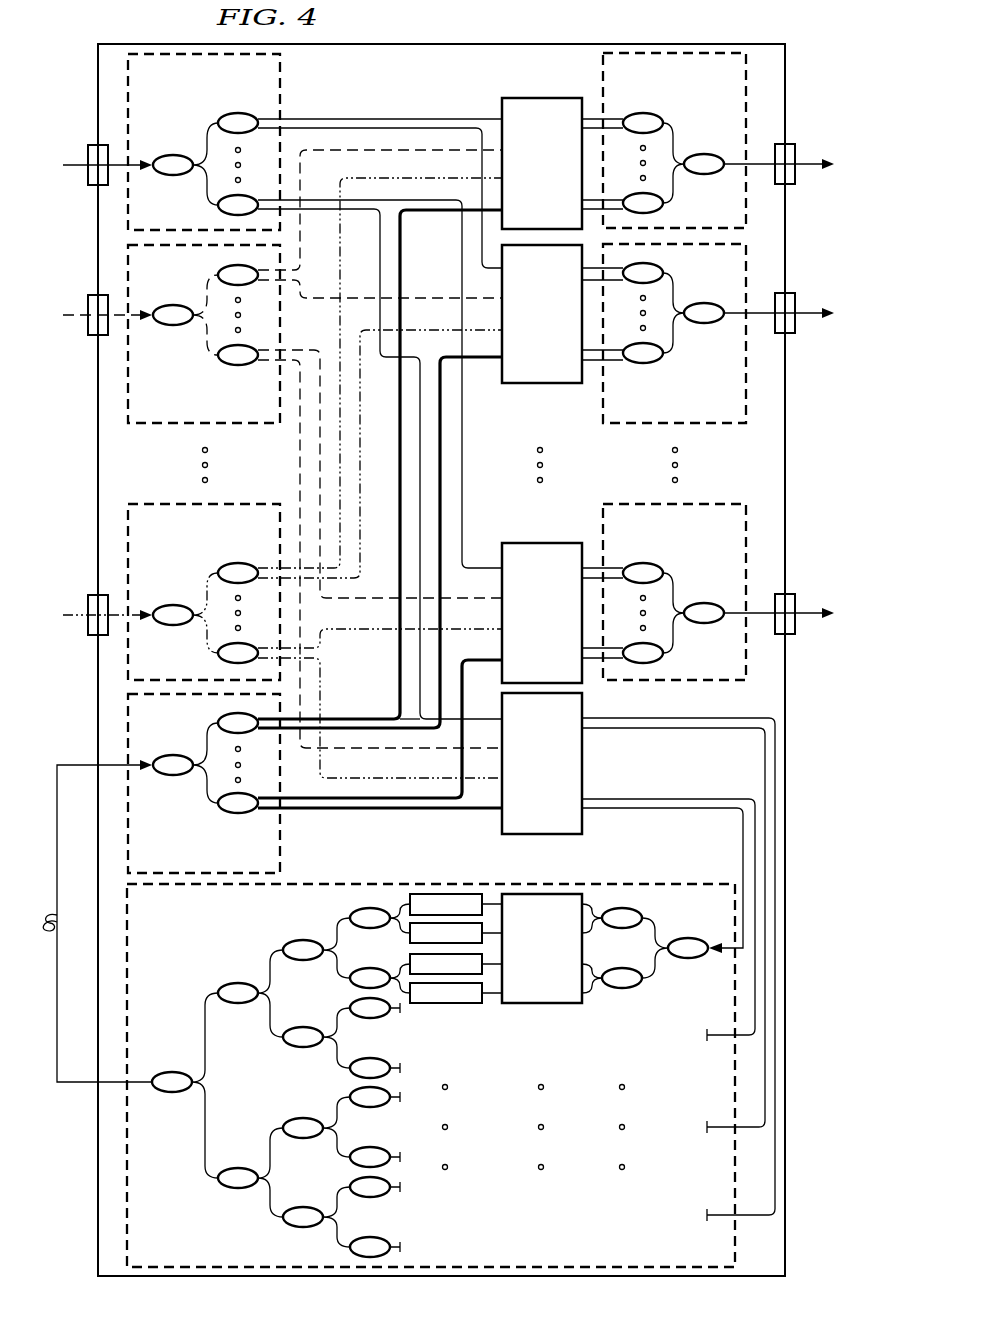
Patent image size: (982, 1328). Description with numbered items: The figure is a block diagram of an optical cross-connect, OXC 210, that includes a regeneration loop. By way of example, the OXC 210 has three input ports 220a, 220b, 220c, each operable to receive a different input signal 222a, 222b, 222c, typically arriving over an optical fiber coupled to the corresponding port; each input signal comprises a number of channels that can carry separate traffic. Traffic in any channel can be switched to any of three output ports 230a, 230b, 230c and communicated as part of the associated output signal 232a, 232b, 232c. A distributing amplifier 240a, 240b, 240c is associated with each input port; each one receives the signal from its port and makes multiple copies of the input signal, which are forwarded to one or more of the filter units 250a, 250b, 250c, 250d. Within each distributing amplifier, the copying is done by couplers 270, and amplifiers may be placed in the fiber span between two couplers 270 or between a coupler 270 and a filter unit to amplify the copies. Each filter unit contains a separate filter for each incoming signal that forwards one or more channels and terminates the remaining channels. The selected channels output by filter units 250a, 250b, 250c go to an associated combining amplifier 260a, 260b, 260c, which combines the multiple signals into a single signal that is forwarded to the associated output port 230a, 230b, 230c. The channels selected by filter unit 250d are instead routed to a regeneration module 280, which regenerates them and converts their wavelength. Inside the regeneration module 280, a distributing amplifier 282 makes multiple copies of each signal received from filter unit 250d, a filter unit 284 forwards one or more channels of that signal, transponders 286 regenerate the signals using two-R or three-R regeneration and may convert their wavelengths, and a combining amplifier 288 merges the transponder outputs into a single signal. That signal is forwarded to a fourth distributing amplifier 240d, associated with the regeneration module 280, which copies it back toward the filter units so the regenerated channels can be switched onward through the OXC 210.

The OXC 210 is at (98, 1146).
The input port 220a is at (80, 174).
The input port 220b is at (80, 324).
The input port 220c is at (80, 624).
The input signal 222a is at (78, 164).
The input signal 222b is at (78, 314).
The input signal 222c is at (78, 614).
The output port 230a is at (797, 173).
The output port 230b is at (797, 323).
The output port 230c is at (797, 623).
The output signal 232a is at (806, 162).
The output signal 232b is at (806, 312).
The output signal 232c is at (806, 612).
The distributing amplifier 240a is at (187, 214).
The distributing amplifier 240b is at (187, 277).
The distributing amplifier 240c is at (187, 664).
The distributing amplifier 240d is at (187, 727).
The filter unit 250a is at (542, 98).
The filter unit 250b is at (540, 384).
The filter unit 250c is at (542, 542).
The filter unit 250d is at (500, 818).
The combining amplifier 260a is at (735, 214).
The combining amplifier 260b is at (735, 282).
The combining amplifier 260c is at (735, 664).
The coupler 270 is at (238, 113).
The regeneration module 280 is at (180, 1257).
The distributing amplifier 282 is at (646, 1060).
The filter unit 284 is at (540, 1004).
The transponder 286 is at (445, 1005).
The combining amplifier 288 is at (228, 961).